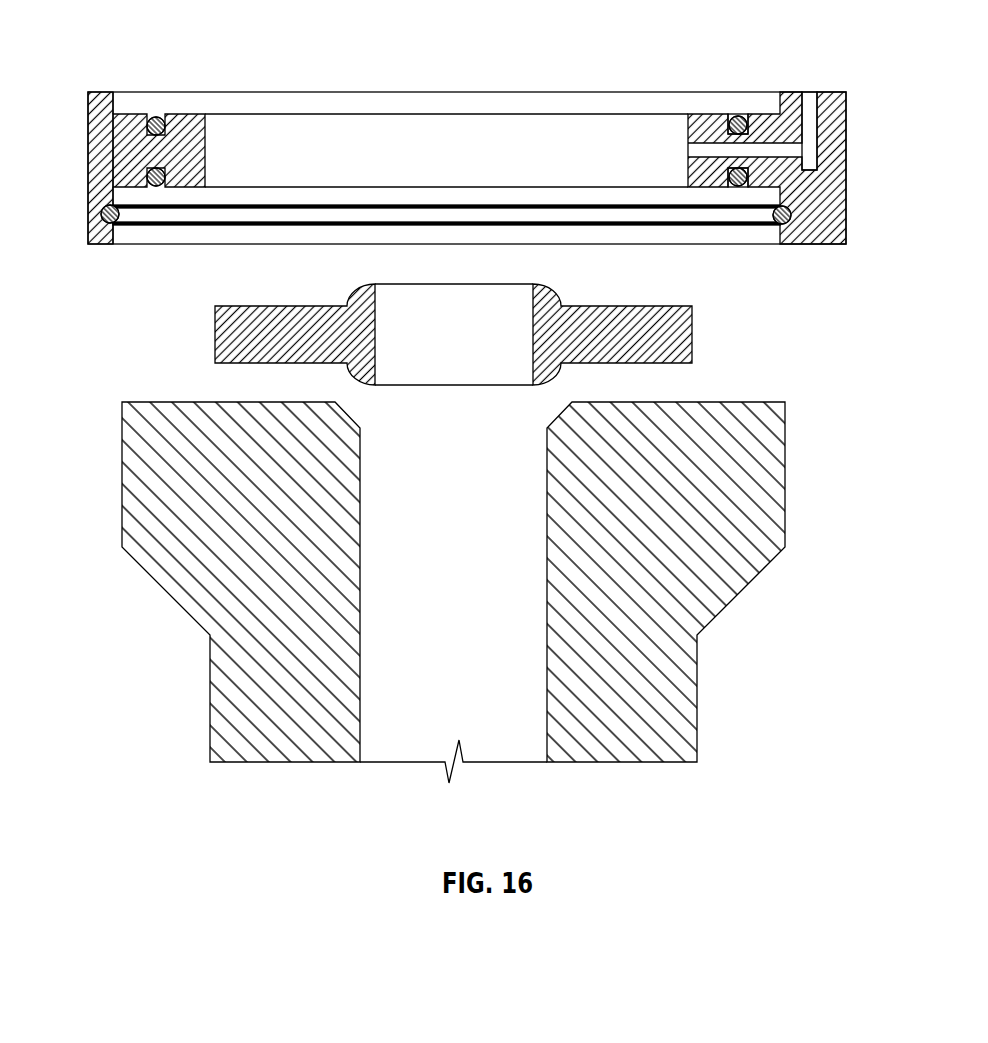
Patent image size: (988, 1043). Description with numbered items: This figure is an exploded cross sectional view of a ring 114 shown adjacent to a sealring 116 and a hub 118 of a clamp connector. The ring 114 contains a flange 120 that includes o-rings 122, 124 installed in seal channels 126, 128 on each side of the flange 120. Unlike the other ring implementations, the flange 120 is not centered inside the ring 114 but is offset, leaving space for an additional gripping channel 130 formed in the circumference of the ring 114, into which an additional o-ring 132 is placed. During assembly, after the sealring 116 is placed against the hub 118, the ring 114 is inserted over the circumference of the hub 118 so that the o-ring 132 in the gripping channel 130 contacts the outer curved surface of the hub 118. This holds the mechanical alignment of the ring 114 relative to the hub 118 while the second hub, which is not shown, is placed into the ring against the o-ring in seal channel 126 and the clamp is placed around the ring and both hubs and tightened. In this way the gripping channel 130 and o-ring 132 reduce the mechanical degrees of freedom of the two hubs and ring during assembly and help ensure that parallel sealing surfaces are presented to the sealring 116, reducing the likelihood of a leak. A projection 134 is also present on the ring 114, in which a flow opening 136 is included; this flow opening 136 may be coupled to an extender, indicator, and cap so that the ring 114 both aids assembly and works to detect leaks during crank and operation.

The ring 114 is at (90, 138).
The sealring 116 is at (685, 338).
The hub 118 is at (775, 518).
The flange 120 is at (685, 127).
The o-ring 122 is at (743, 117).
The o-ring 124 is at (742, 187).
The seal channel 126 is at (735, 117).
The seal channel 128 is at (735, 187).
The gripping channel 130 is at (792, 215).
The o-ring 132 is at (100, 213).
The projection 134 is at (847, 127).
The flow opening 136 is at (810, 98).